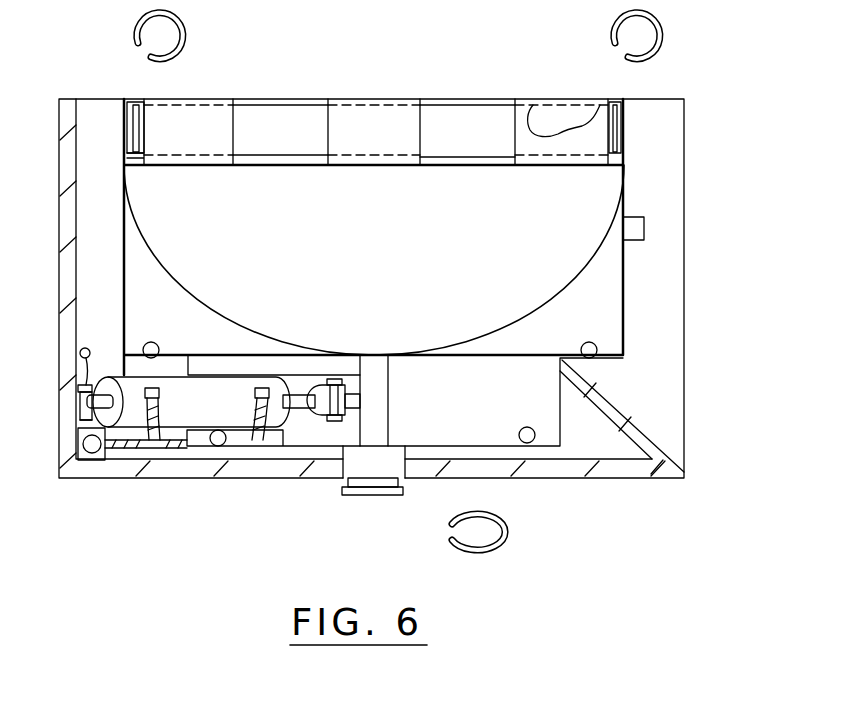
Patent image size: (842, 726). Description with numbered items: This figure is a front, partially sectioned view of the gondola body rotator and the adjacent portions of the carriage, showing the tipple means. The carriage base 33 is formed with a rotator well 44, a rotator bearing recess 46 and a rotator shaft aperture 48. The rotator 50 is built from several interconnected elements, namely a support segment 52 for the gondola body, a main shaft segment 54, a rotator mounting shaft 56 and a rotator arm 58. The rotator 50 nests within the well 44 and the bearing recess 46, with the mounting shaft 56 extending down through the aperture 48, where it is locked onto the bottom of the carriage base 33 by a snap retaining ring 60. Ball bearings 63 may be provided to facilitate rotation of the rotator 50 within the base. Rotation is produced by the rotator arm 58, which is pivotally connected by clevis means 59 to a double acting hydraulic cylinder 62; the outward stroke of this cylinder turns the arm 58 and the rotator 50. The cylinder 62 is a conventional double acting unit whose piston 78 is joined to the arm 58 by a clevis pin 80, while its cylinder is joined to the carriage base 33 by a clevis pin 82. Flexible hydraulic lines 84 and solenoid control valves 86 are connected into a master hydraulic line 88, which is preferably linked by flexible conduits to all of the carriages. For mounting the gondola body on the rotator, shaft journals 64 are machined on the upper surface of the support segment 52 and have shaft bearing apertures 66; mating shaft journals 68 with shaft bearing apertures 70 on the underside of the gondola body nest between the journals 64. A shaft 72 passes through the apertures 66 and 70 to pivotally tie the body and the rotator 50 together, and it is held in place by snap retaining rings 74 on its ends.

The carriage base 33 is at (653, 98).
The rotator well 44 is at (600, 294).
The rotator bearing recess 46 is at (556, 432).
The rotator shaft aperture 48 is at (346, 462).
The rotator 50 is at (640, 255).
The support segment 52 is at (625, 205).
The main shaft segment 54 is at (563, 402).
The rotator mounting shaft 56 is at (358, 498).
The rotator arm 58 is at (390, 402).
The clevis means 59 is at (329, 375).
The snap retaining ring 60 is at (472, 516).
The double acting hydraulic cylinder 62 is at (217, 398).
The ball bearings 63 is at (598, 330).
The shaft journals 64 is at (203, 99).
The shaft bearing apertures 66 is at (547, 118).
The mating shaft journals 68 is at (253, 99).
The shaft bearing apertures 70 is at (288, 100).
The shaft 72 is at (121, 126).
The snap retaining rings 74 is at (176, 66).
The piston 78 is at (297, 400).
The clevis pin 80 is at (347, 421).
The clevis pin 82 is at (85, 383).
The flexible hydraulic lines 84 is at (268, 414).
The solenoid control valves 86 is at (105, 462).
The master hydraulic line 88 is at (86, 348).